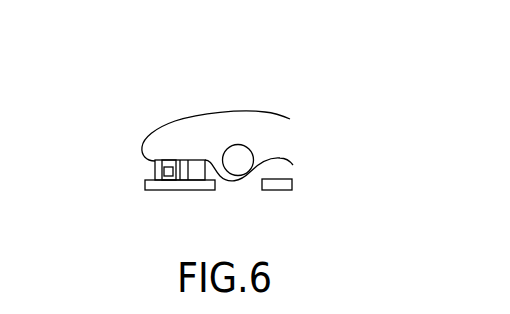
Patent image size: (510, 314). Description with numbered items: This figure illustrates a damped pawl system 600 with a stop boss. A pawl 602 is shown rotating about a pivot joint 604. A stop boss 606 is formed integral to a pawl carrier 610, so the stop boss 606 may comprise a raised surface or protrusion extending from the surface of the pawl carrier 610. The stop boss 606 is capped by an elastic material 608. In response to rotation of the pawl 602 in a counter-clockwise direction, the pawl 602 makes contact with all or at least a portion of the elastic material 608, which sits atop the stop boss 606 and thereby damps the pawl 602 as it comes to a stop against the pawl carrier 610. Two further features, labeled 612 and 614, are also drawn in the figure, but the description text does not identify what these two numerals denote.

The damped pawl system 600 is at (338, 121).
The pawl 602 is at (253, 130).
The pivot joint 604 is at (242, 168).
The stop boss 606 is at (168, 178).
The elastic material 608 is at (157, 163).
The pawl carrier 610 is at (145, 188).
The lead 612 is at (207, 192).
The terminal 614 is at (192, 190).